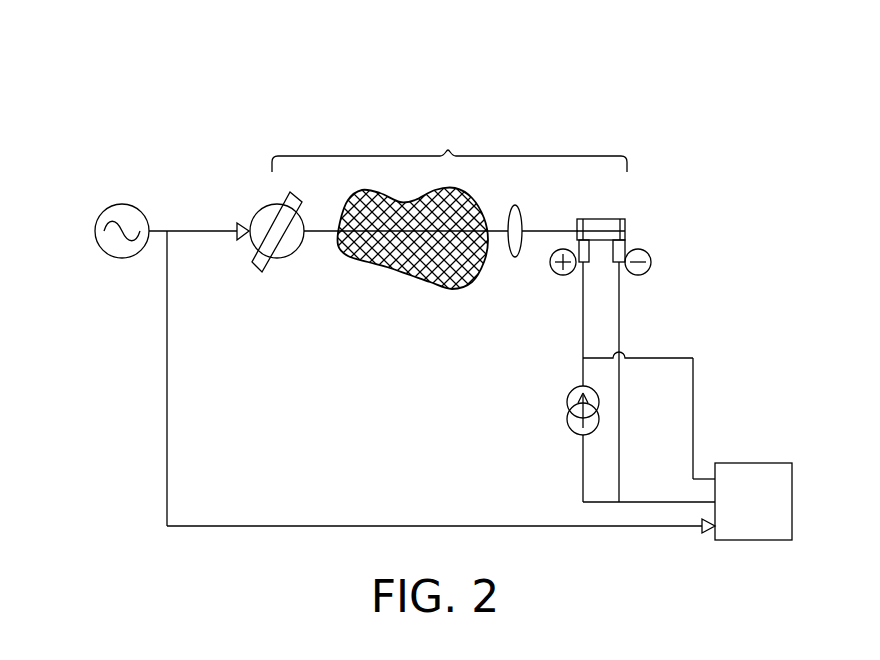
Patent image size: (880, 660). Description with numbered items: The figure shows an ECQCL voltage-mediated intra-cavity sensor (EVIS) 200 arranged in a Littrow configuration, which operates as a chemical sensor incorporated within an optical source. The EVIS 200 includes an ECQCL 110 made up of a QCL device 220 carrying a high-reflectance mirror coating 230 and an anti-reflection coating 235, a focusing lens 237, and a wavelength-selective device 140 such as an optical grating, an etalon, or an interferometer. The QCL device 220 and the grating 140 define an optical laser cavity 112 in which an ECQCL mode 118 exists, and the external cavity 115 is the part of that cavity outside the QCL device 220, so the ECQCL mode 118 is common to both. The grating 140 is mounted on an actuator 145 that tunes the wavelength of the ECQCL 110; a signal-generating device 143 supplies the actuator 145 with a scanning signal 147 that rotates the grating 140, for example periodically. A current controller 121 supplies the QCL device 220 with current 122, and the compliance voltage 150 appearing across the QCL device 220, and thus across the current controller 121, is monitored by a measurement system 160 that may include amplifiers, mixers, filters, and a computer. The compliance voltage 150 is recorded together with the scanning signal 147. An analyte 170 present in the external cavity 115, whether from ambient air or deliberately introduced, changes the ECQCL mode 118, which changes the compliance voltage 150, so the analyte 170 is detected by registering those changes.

The ECQCL voltage-mediated intra-cavity sensor (EVIS) 200 is at (205, 112).
The signal-generating device 143 is at (113, 206).
The scanning signal 147 is at (193, 233).
The wavelength-selective device 140 is at (269, 249).
The actuator 145 is at (285, 258).
The ECQCL mode 118 is at (327, 225).
The analyte 170 is at (392, 270).
The ECQCL 110 is at (448, 149).
The optical laser cavity 112 is at (349, 152).
The external cavity 115 is at (573, 153).
The focusing lens 237 is at (507, 203).
The QCL device 220 is at (592, 238).
The high-reflectance mirror coating 230 is at (621, 222).
The anti-reflection coating 235 is at (578, 236).
The current 122 is at (582, 327).
The current controller 121 is at (570, 427).
The compliance voltage 150 is at (663, 352).
The measurement system 160 is at (753, 501).